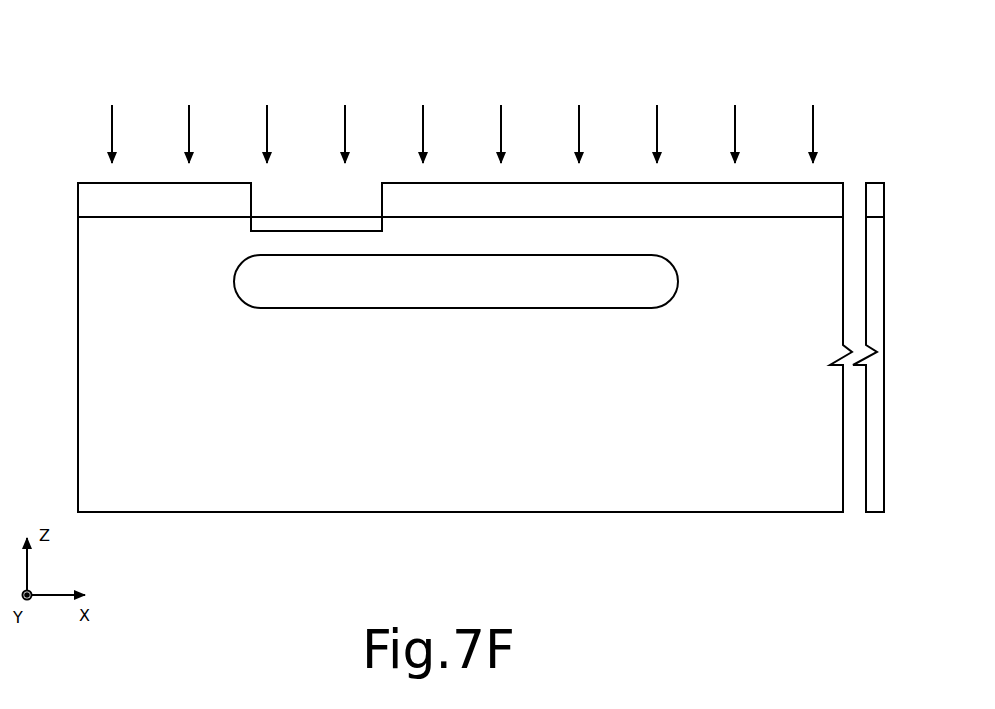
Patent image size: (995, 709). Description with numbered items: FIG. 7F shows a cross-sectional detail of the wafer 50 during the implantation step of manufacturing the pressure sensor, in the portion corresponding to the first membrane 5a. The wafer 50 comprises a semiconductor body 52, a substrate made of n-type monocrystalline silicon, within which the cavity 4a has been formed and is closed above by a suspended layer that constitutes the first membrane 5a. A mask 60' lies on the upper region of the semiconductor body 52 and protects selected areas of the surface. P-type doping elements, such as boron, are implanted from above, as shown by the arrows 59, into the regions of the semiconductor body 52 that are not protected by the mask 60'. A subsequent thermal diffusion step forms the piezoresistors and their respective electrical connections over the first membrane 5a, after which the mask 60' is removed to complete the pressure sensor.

The wafer 50 is at (77, 166).
The semiconductor body 52 is at (796, 491).
The arrows 59 is at (267, 105).
The first membrane 5a is at (580, 237).
The cavity 4a is at (409, 289).
The top layer 60' is at (481, 290).